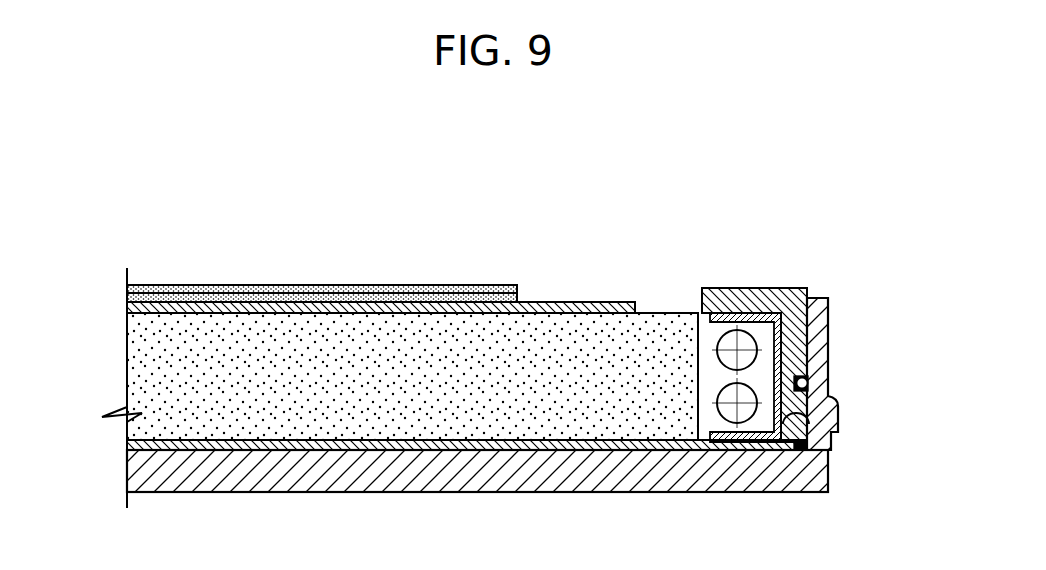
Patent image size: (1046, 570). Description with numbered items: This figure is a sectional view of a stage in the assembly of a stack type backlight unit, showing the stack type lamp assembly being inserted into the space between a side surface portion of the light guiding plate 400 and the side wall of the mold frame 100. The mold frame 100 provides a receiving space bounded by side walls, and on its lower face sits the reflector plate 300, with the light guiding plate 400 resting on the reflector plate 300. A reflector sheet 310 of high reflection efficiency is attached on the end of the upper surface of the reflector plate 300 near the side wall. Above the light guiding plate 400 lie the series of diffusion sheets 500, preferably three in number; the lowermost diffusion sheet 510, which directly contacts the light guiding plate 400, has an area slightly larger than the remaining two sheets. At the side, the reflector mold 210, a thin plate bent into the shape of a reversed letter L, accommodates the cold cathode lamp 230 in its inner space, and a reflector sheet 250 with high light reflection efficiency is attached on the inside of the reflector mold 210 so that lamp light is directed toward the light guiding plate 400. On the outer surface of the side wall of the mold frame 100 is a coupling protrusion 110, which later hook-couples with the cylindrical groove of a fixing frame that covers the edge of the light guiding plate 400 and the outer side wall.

The mold frame 100 is at (590, 470).
The coupling protrusion 110 is at (840, 401).
The reflector mold 210 is at (758, 298).
The lamp 230 is at (728, 340).
The reflector sheet 250 is at (708, 370).
The reflector plate 300 is at (373, 445).
The reflector sheet 310 is at (808, 422).
The light guiding plate 400 is at (145, 383).
The diffusion sheets 500 is at (115, 283).
The lowermost diffusion sheet 510 is at (133, 310).